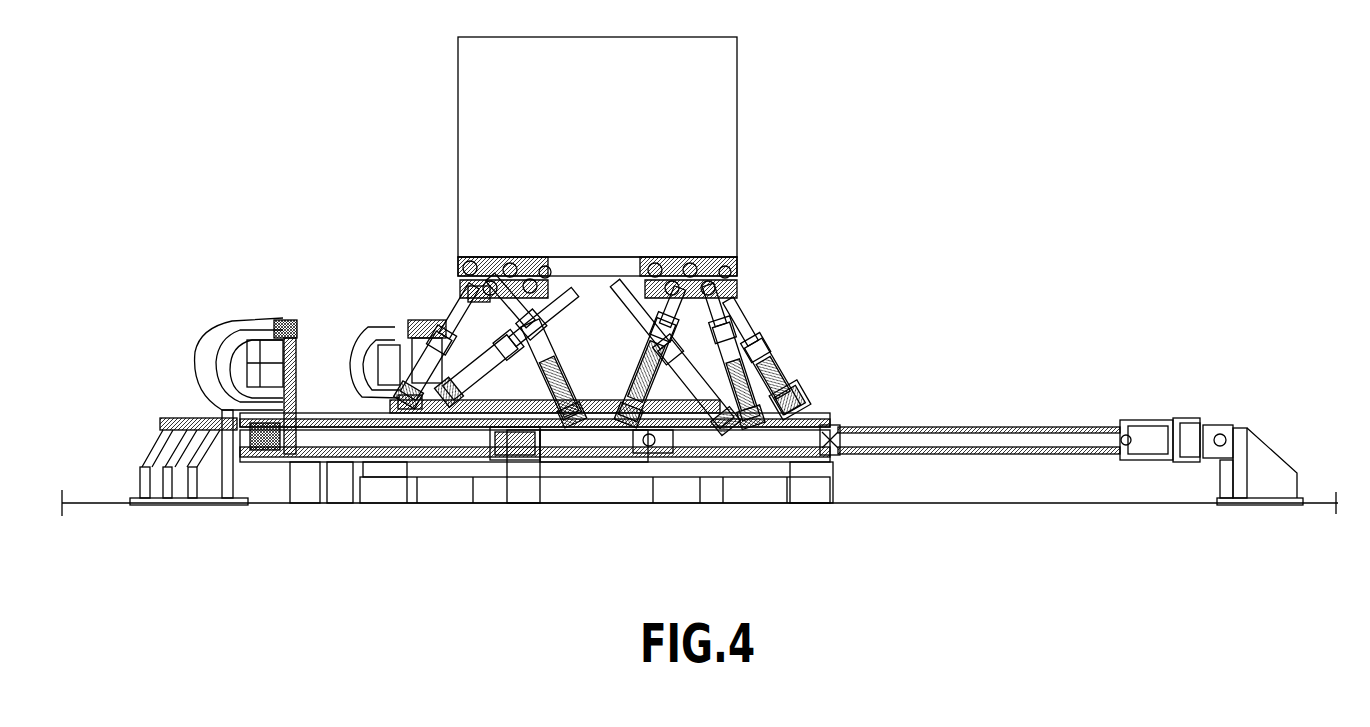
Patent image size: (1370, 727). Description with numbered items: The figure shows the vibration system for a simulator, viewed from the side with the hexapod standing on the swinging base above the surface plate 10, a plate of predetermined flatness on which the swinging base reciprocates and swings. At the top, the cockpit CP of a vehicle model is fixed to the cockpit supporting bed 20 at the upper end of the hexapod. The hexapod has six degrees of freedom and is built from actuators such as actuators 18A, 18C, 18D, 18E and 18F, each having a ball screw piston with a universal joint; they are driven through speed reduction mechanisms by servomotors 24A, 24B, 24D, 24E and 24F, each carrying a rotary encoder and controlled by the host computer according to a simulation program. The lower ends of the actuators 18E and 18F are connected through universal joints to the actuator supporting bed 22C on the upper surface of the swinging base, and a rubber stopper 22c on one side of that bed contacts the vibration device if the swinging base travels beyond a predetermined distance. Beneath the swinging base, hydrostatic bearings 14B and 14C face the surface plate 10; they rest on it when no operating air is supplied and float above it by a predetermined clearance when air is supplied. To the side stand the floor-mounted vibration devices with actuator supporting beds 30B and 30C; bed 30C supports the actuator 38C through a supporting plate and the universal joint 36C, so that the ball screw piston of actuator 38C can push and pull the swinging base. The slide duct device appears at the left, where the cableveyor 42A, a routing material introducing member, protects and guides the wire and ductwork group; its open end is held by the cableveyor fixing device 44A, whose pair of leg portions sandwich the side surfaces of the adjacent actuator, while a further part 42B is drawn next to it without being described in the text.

The surface plate 10 is at (967, 505).
The cockpit CP is at (738, 140).
The cockpit supporting bed 20 is at (737, 268).
The servomotor 24B is at (478, 290).
The actuator 18A is at (410, 330).
The actuator 18C is at (722, 312).
The actuator 18D is at (757, 362).
The actuator 18E is at (650, 352).
The actuator 18F is at (538, 349).
The servomotor 24A is at (395, 405).
The servomotor 24D is at (820, 370).
The servomotor 24E is at (680, 460).
The servomotor 24F is at (497, 460).
The stopper 22c is at (530, 455).
The actuator supporting bed 22C is at (620, 450).
The hydrostatic bearing 14C is at (575, 497).
The hydrostatic bearing 14B is at (815, 495).
The actuator supporting bed 30B is at (212, 483).
The actuator supporting bed 30C is at (1300, 470).
The universal joint 36C is at (1217, 425).
The actuator 38C is at (1008, 428).
The cableveyor 42A is at (362, 338).
The motor 42B is at (197, 343).
The cableveyor fixing device 44A is at (290, 318).